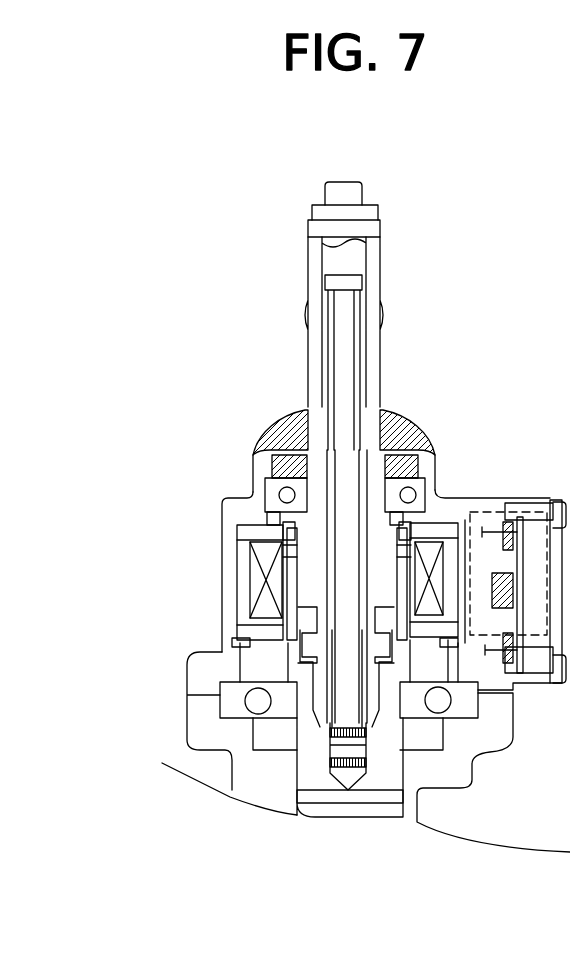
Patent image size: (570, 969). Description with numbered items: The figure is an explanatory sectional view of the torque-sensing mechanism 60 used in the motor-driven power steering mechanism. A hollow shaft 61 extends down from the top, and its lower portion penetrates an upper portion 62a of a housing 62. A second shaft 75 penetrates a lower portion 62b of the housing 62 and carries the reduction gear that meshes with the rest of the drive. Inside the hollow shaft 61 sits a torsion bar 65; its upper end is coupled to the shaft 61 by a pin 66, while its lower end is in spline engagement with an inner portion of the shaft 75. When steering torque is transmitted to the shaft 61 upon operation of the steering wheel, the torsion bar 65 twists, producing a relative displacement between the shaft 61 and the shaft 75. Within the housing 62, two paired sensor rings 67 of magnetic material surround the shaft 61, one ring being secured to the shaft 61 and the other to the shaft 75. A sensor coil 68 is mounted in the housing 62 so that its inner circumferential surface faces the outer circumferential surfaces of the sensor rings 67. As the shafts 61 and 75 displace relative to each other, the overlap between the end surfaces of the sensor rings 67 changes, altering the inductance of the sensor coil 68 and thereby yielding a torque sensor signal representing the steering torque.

The torque-sensing mechanism 60 is at (489, 451).
The shaft 61 is at (370, 263).
The housing 62 is at (211, 506).
The upper portion of housing 62a is at (250, 500).
The lower portion of housing 62b is at (202, 727).
The torsion bar 65 is at (347, 362).
The pin 66 is at (367, 232).
The sensor rings 67 is at (285, 605).
The sensor coil 68 is at (253, 567).
The shaft 75 is at (390, 766).